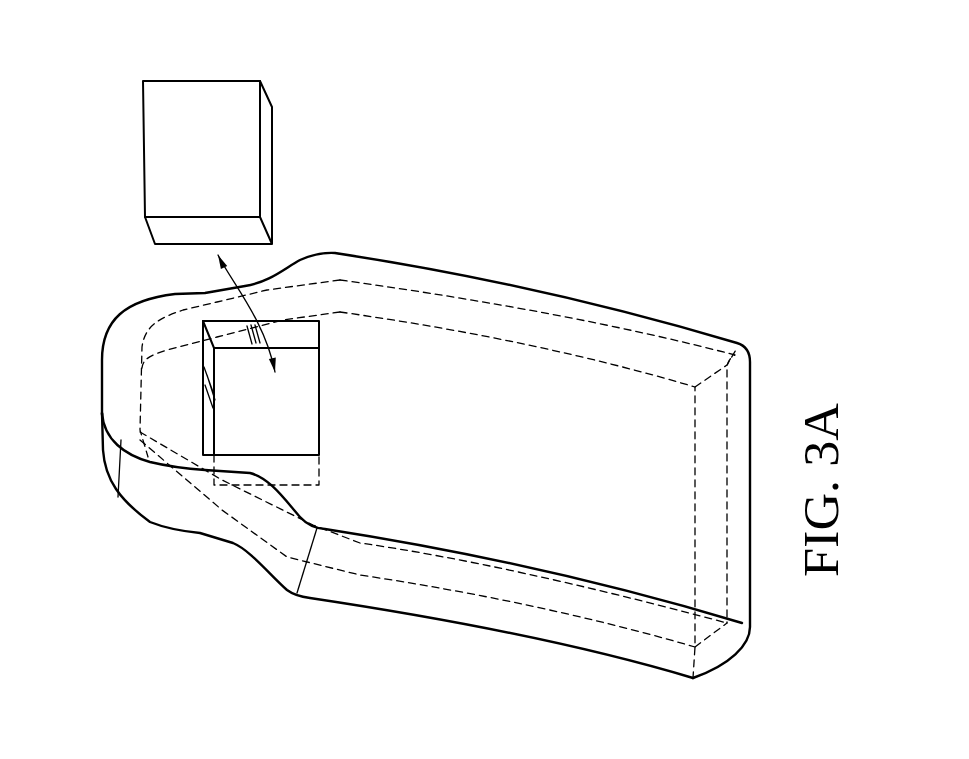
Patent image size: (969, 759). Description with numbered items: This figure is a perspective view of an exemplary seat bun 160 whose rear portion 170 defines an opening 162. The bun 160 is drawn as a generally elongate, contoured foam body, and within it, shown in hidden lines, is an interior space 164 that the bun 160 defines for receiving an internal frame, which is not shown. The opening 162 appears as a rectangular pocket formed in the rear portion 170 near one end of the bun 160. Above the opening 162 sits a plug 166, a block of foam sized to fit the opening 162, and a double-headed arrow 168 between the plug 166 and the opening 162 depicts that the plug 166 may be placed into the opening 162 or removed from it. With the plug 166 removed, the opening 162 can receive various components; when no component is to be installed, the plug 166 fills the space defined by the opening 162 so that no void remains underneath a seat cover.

The bun 160 is at (140, 282).
The opening 162 is at (288, 402).
The interior space 164 is at (547, 387).
The plug 166 is at (267, 157).
The arrow 168 is at (236, 284).
The rear portion 170 is at (380, 436).